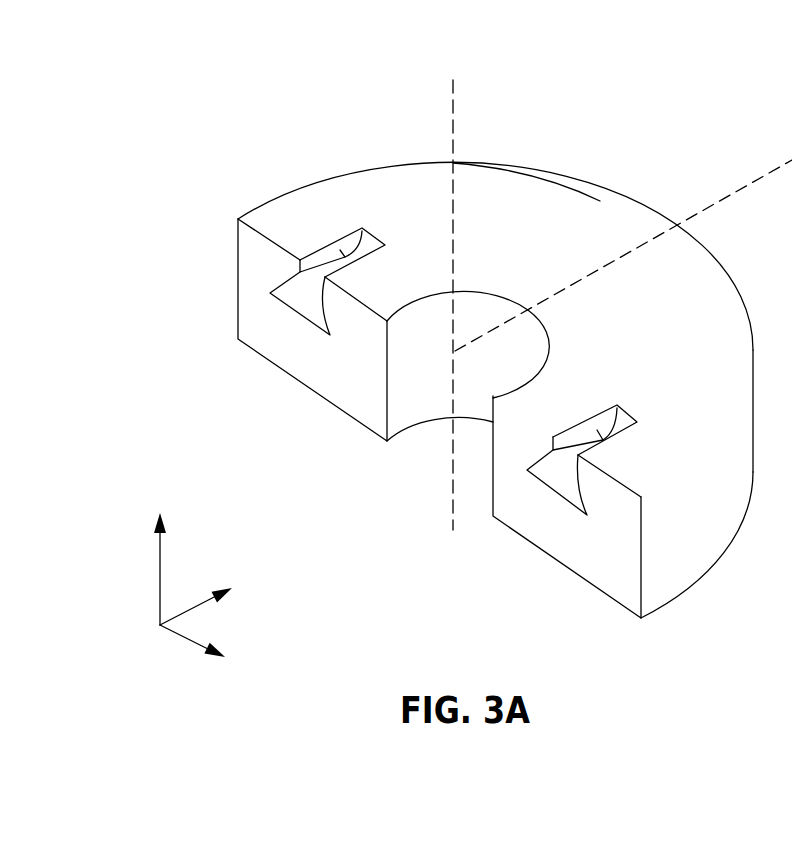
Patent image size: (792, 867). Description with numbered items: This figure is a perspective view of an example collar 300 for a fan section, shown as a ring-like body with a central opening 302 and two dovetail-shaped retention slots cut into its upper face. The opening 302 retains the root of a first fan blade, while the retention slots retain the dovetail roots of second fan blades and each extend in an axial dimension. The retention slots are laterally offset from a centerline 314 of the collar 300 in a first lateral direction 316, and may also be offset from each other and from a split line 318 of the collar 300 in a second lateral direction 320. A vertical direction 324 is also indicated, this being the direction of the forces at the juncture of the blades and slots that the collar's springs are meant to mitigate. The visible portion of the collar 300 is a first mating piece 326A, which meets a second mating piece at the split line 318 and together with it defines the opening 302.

The collar 300 is at (322, 90).
The opening 302 is at (432, 448).
The centerline 314 is at (745, 186).
The first lateral direction 316 is at (197, 645).
The split line 318 is at (257, 233).
The second lateral direction 320 is at (210, 605).
The vertical direction 324 is at (160, 550).
The first mating piece 326A is at (543, 170).